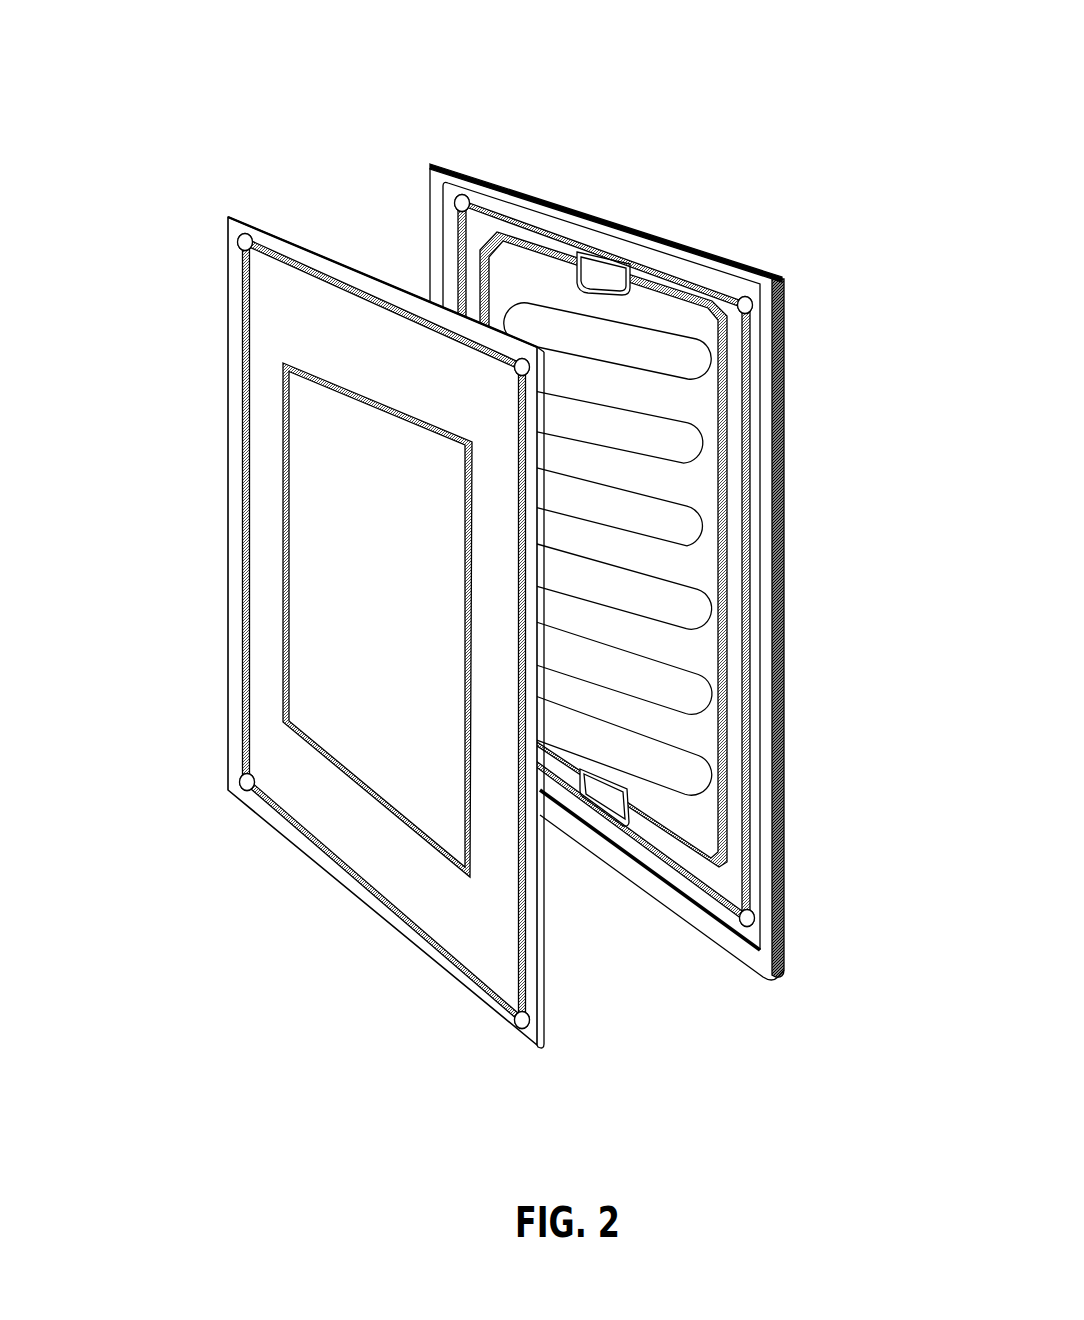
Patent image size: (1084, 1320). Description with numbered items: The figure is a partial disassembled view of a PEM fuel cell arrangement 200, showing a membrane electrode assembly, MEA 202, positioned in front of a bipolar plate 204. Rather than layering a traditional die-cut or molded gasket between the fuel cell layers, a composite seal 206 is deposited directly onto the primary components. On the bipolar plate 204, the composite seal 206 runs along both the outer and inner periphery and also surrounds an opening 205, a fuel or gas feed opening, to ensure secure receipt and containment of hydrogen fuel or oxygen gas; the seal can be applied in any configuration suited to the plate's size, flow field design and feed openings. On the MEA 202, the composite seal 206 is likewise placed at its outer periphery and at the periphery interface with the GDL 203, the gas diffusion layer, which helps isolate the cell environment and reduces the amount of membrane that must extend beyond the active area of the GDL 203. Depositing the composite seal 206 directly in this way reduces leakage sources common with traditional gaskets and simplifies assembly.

The fuel cell arrangement 200 is at (222, 82).
The MEA 202 is at (308, 847).
The GDL 203 is at (430, 817).
The bipolar plate 204 is at (782, 780).
The opening 205 is at (617, 277).
The composite seal 206 is at (601, 285).